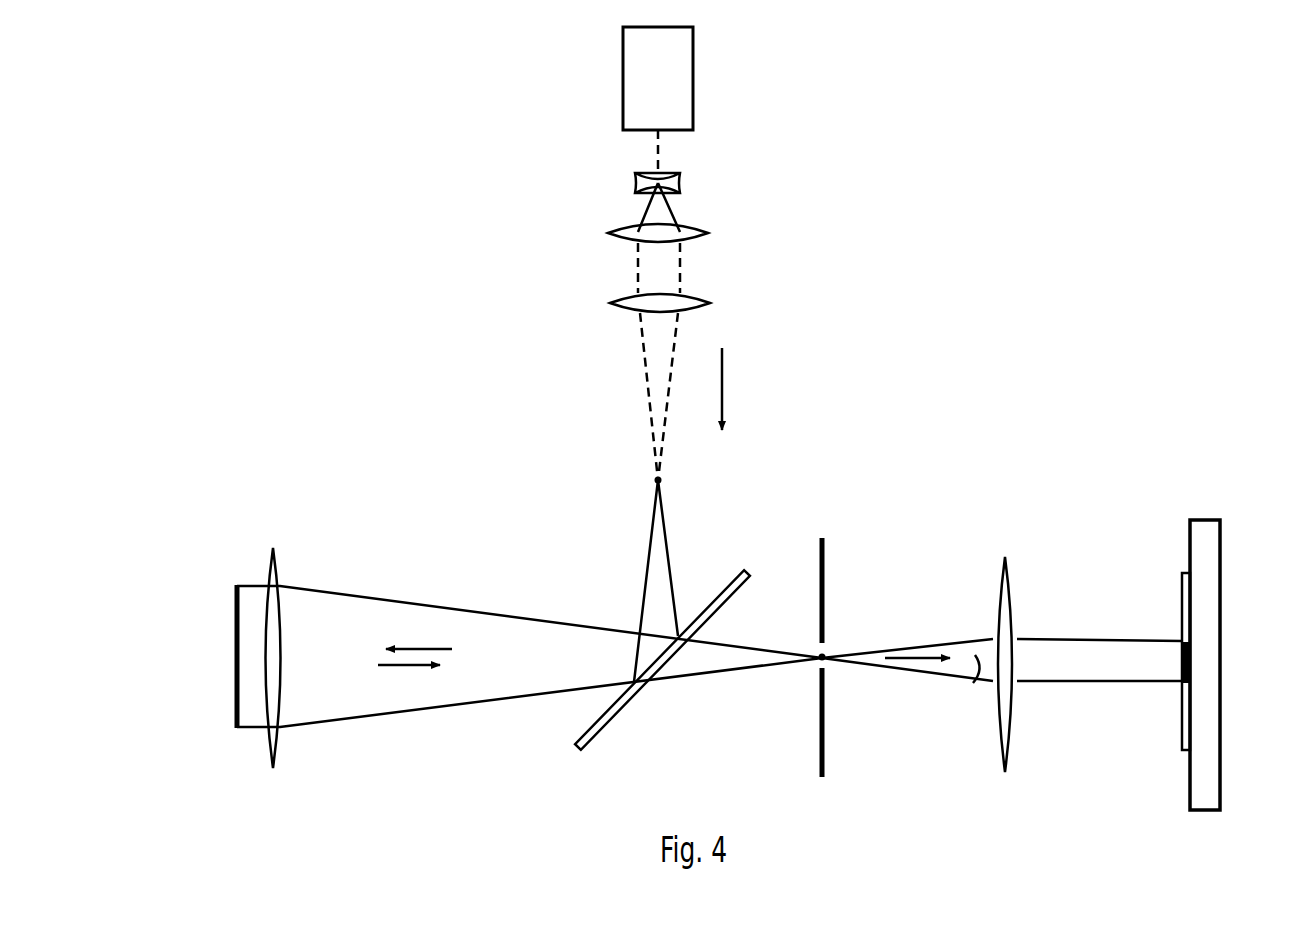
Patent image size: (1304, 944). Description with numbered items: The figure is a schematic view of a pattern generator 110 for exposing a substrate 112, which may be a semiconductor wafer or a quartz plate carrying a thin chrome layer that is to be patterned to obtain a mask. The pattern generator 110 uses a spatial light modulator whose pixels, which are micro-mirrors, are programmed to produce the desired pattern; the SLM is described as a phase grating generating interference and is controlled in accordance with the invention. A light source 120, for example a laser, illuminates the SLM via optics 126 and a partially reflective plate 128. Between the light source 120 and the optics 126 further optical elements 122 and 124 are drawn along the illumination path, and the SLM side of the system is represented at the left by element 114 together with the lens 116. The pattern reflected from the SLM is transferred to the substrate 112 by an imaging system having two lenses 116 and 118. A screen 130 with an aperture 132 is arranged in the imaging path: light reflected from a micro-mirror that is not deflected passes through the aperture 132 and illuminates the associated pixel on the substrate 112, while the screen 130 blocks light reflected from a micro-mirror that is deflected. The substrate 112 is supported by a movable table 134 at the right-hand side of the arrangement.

The pattern generator 110 is at (1042, 172).
The substrate 112 is at (1182, 573).
The mirror 114 is at (236, 658).
The lens 116 is at (276, 550).
The lens 118 is at (1007, 557).
The light source 120 is at (693, 88).
The diverging lens 122 is at (680, 185).
The first lens 124 is at (708, 233).
The optics 126 is at (710, 303).
The partially reflective plate 128 is at (747, 572).
The screen 130 is at (824, 538).
The aperture 132 is at (825, 648).
The movable table 134 is at (1210, 553).